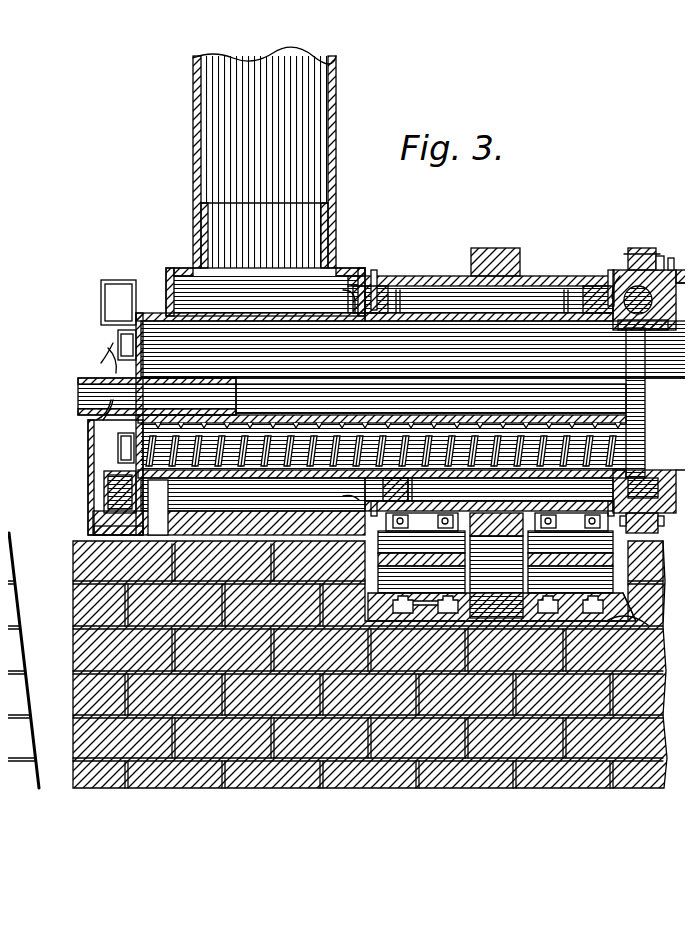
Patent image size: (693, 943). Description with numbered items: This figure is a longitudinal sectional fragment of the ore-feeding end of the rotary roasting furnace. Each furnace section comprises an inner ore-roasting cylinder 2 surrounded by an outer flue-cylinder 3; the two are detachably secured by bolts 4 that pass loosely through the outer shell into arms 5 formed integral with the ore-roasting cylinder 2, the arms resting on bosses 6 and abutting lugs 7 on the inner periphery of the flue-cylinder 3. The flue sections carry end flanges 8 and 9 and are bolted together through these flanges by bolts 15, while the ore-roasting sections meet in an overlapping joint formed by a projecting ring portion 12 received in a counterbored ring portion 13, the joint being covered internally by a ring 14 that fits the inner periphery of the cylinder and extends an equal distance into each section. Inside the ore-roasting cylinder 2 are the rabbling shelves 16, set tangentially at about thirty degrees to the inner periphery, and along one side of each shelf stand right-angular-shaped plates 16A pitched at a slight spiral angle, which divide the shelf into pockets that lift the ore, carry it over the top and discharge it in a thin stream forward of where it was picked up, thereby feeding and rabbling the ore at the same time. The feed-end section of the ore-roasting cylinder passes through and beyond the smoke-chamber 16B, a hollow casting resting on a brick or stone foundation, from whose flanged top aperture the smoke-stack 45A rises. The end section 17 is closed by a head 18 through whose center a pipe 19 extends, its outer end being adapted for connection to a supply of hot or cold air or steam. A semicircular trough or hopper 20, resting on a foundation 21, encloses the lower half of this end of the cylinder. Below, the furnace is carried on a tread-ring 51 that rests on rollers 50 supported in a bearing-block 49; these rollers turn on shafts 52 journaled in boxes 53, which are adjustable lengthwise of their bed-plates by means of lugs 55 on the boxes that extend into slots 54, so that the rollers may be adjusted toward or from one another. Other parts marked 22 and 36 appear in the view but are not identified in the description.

The smoke-stack 45A is at (185, 137).
The smoke-chamber 16B is at (168, 260).
The end section 17 is at (143, 303).
The flue-cylinder 3 is at (417, 268).
The ore-roasting cylinder 2 is at (479, 313).
The tread-ring 51 is at (486, 240).
The bolts 4 is at (366, 262).
The arms 5 is at (370, 307).
The lugs 7 is at (393, 307).
The bosses 6 is at (339, 306).
The shelves 16 is at (413, 367).
The pipe 19 is at (70, 388).
The ring 14 is at (618, 371).
The right-angular-shaped plates 16A is at (552, 418).
The counterbored ring portion 13 is at (600, 322).
The projecting ring portion 12 is at (642, 312).
The flange 9 is at (628, 240).
The flange 8 is at (651, 247).
The bolts 15 is at (662, 262).
The air ports 22 is at (93, 299).
The head 18 is at (85, 414).
The trough or hopper 20 is at (80, 483).
The foundation 21 is at (65, 538).
The boxes 53 is at (495, 553).
The bolts 36 is at (419, 523).
The rollers 50 is at (496, 565).
The shafts 52 is at (605, 562).
The bearing-block 49 is at (620, 596).
The lugs 55 is at (624, 609).
The slots 54 is at (654, 614).